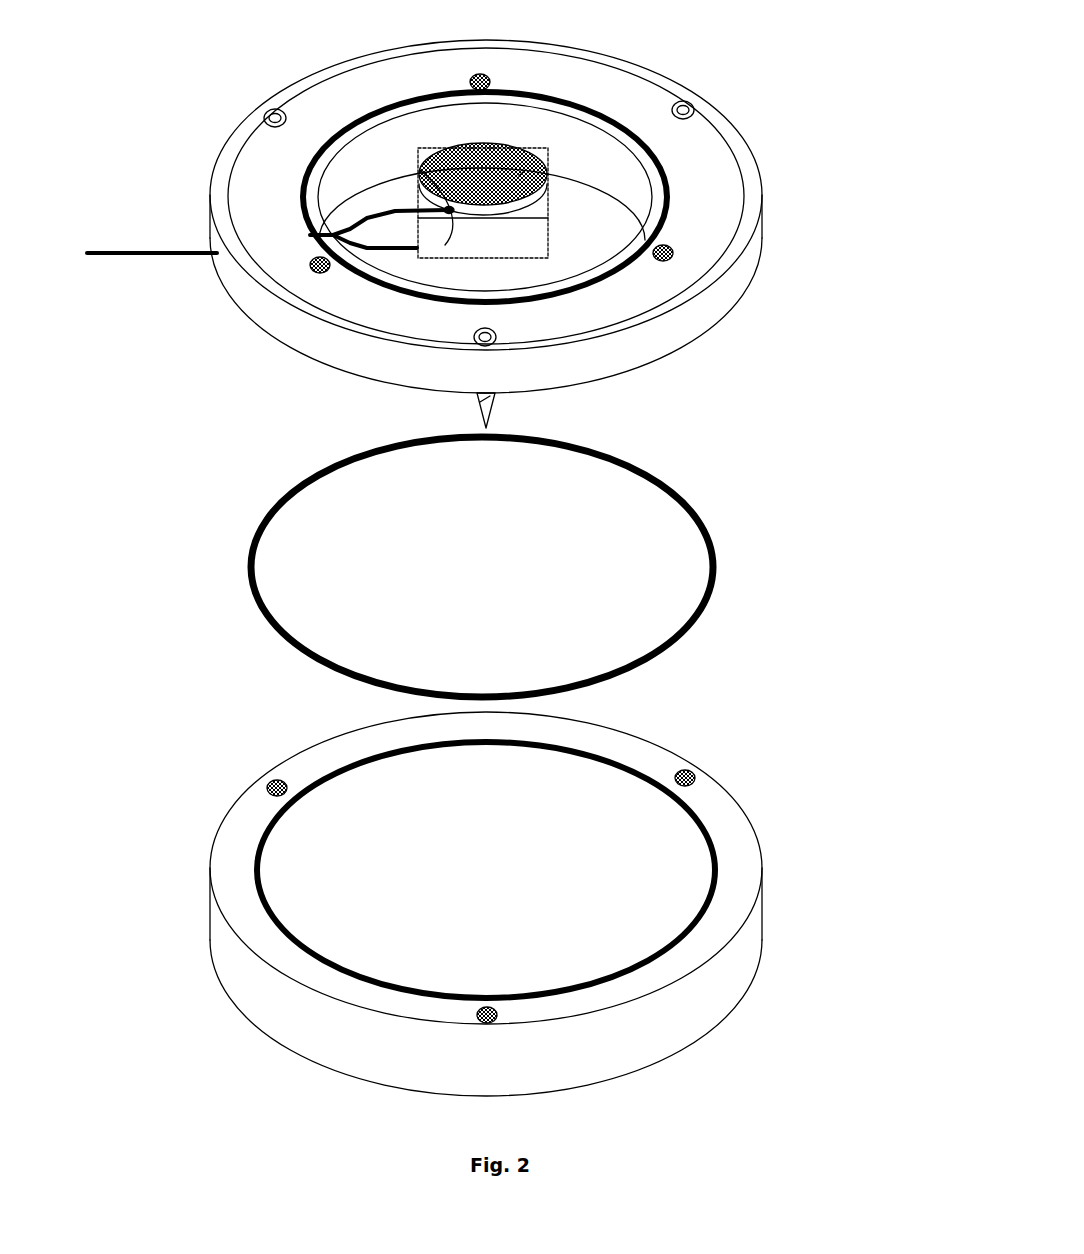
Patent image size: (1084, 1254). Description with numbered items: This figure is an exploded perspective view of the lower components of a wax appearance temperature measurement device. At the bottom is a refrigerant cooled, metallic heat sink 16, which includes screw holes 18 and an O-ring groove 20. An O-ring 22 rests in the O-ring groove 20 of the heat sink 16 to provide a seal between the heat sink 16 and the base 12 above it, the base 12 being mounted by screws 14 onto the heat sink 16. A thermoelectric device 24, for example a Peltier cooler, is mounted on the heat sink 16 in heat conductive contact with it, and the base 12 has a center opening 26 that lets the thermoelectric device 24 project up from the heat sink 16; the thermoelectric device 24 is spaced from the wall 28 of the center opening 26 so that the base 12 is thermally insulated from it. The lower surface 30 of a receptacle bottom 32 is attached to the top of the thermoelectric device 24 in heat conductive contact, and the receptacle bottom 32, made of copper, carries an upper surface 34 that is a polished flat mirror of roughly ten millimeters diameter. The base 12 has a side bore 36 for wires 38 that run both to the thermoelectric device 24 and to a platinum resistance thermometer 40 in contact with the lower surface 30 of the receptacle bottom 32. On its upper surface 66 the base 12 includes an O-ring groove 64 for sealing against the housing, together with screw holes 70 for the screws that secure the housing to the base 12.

The base 12 is at (758, 236).
The screws 14 is at (497, 338).
The heat sink 16 is at (761, 912).
The screw holes 18 is at (498, 1016).
The O-ring groove 20 is at (716, 853).
The O-ring 22 is at (716, 566).
The thermoelectric device 24 is at (528, 240).
The center opening 26 is at (572, 203).
The wall 28 is at (503, 127).
The lower surface 30 is at (445, 245).
The receptacle bottom 32 is at (548, 172).
The upper surface 34 is at (520, 176).
The side bore 36 is at (216, 254).
The wires 38 is at (333, 235).
The platinum resistance thermometer 40 is at (447, 210).
The O-ring groove 64 is at (620, 268).
The upper surface 66 is at (710, 250).
The screw holes 70 is at (312, 270).